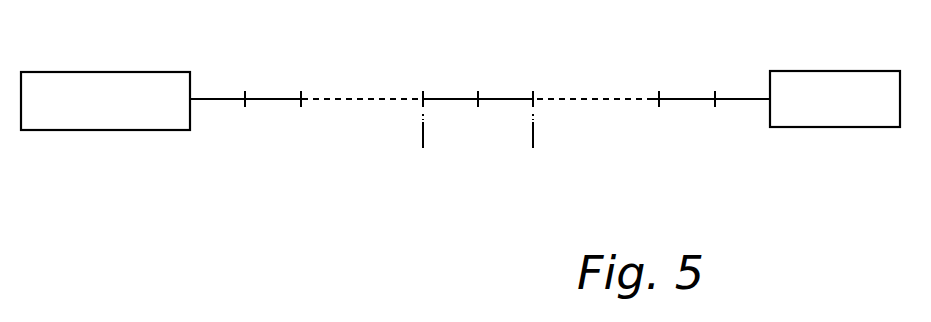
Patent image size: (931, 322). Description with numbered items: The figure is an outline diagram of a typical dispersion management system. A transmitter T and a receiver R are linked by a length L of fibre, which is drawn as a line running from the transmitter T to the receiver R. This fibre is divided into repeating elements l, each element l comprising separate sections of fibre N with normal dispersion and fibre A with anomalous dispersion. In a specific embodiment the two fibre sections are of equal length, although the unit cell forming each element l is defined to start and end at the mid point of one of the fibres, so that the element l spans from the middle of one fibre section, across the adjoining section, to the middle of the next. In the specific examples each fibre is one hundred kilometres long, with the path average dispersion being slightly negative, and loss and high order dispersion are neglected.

The transmitter T is at (372, 167).
The receiver R is at (403, 167).
The length of fibre L is at (386, 169).
The fibre with normal dispersion N is at (449, 91).
The fibre with anomalous dispersion A is at (504, 91).
The element l is at (423, 138).